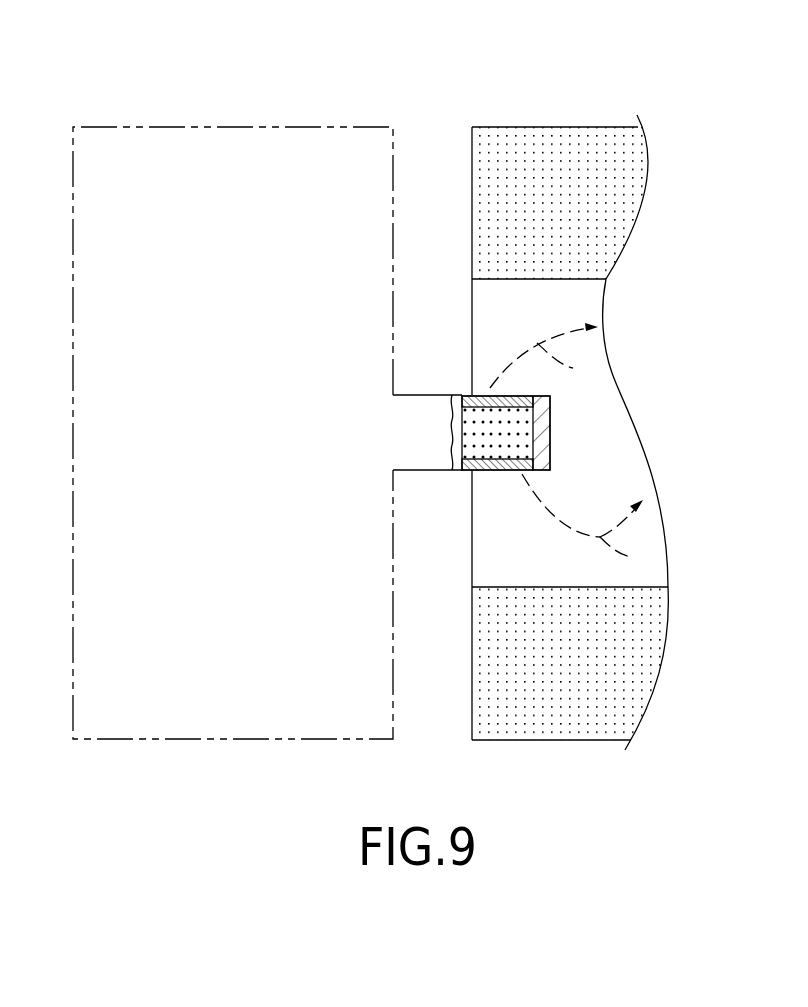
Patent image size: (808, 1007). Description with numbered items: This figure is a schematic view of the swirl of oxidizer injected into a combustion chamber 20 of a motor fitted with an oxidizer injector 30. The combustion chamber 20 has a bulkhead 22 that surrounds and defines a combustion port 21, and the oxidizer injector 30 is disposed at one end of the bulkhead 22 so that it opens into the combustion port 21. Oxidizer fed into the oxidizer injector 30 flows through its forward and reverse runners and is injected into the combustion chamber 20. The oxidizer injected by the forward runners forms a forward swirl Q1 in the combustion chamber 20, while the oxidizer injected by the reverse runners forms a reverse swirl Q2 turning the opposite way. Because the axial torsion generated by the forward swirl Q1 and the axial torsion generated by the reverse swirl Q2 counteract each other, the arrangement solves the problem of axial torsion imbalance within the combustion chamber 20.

The combustion chamber 20 is at (580, 390).
The combustion port 21 is at (580, 300).
The bulkhead 22 is at (503, 125).
The oxidizer injector 30 is at (455, 380).
The forward swirl Q1 is at (573, 368).
The reverse swirl Q2 is at (633, 557).